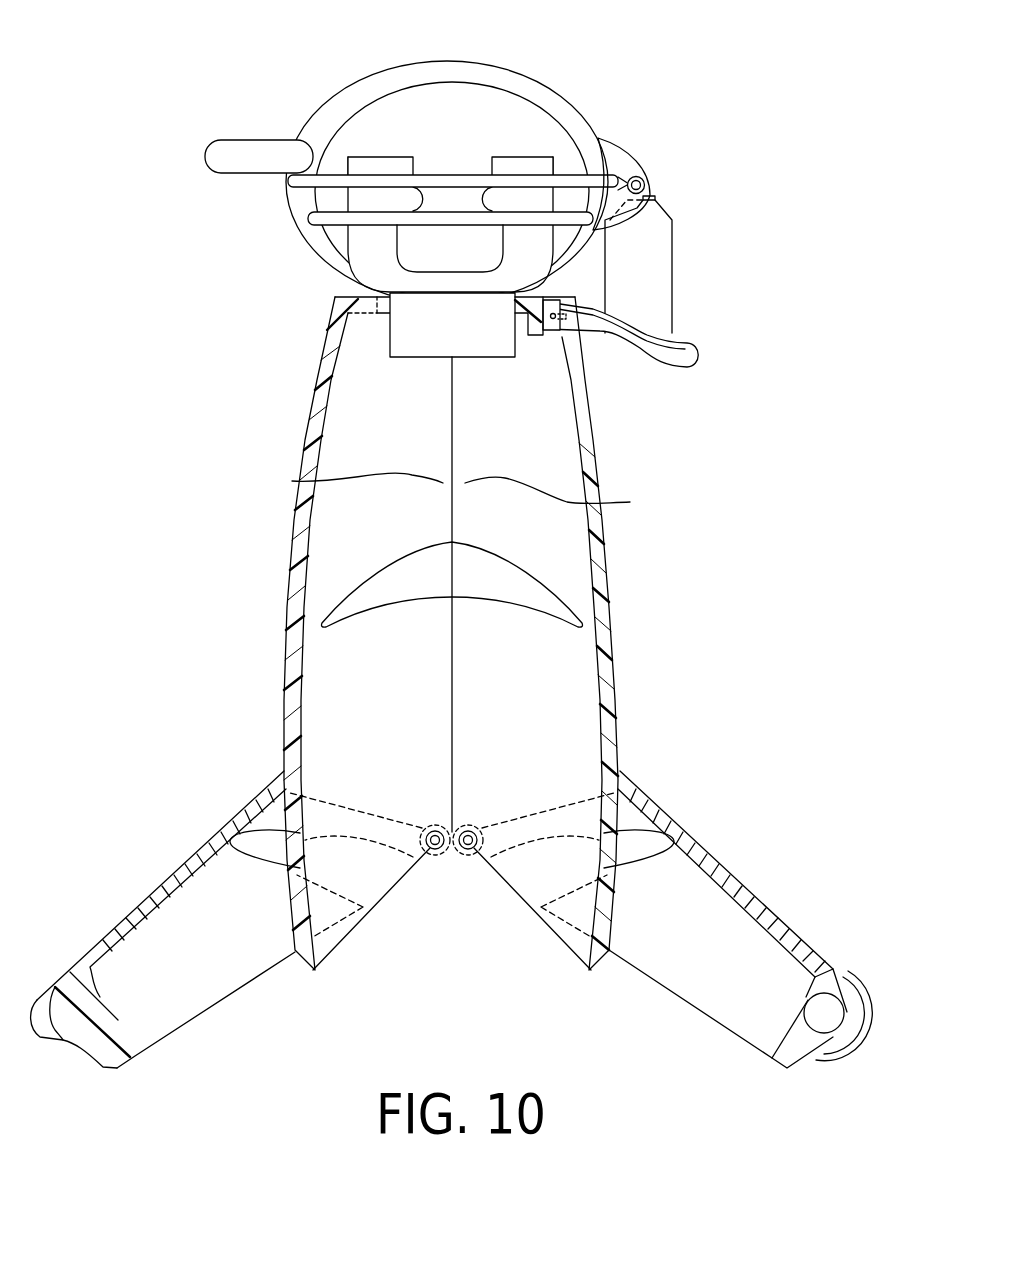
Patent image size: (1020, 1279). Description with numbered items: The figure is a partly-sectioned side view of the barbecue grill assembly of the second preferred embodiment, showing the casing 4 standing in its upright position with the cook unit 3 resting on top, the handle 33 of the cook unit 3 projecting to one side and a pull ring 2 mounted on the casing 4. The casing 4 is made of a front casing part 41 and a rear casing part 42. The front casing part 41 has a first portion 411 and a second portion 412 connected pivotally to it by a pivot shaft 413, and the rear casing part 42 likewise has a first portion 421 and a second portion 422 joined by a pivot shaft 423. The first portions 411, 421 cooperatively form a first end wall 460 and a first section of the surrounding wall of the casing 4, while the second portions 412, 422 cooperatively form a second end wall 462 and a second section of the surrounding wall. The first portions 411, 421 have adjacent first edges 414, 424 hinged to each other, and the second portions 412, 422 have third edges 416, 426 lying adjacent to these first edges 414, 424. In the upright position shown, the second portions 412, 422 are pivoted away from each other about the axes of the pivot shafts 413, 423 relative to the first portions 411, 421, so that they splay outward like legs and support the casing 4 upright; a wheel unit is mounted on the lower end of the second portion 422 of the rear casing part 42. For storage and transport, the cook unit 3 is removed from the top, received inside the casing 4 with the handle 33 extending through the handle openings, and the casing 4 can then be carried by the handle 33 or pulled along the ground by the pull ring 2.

The pull ring 2 is at (655, 352).
The cook unit 3 is at (440, 160).
The handle 33 is at (217, 138).
The casing 4 is at (452, 703).
The front casing part 41 is at (240, 922).
The rear casing part 42 is at (662, 893).
The first portion 411 is at (298, 608).
The second portion 412 is at (158, 878).
The pivot shaft 413 is at (428, 862).
The first edge 414 is at (300, 478).
The third edge 416 is at (237, 993).
The first portion 421 is at (610, 577).
The second portion 422 is at (770, 912).
The pivot shaft 423 is at (471, 857).
The first edge 424 is at (630, 502).
The third edge 426 is at (708, 1018).
The first end wall 460 is at (363, 305).
The second end wall 462 is at (110, 1047).